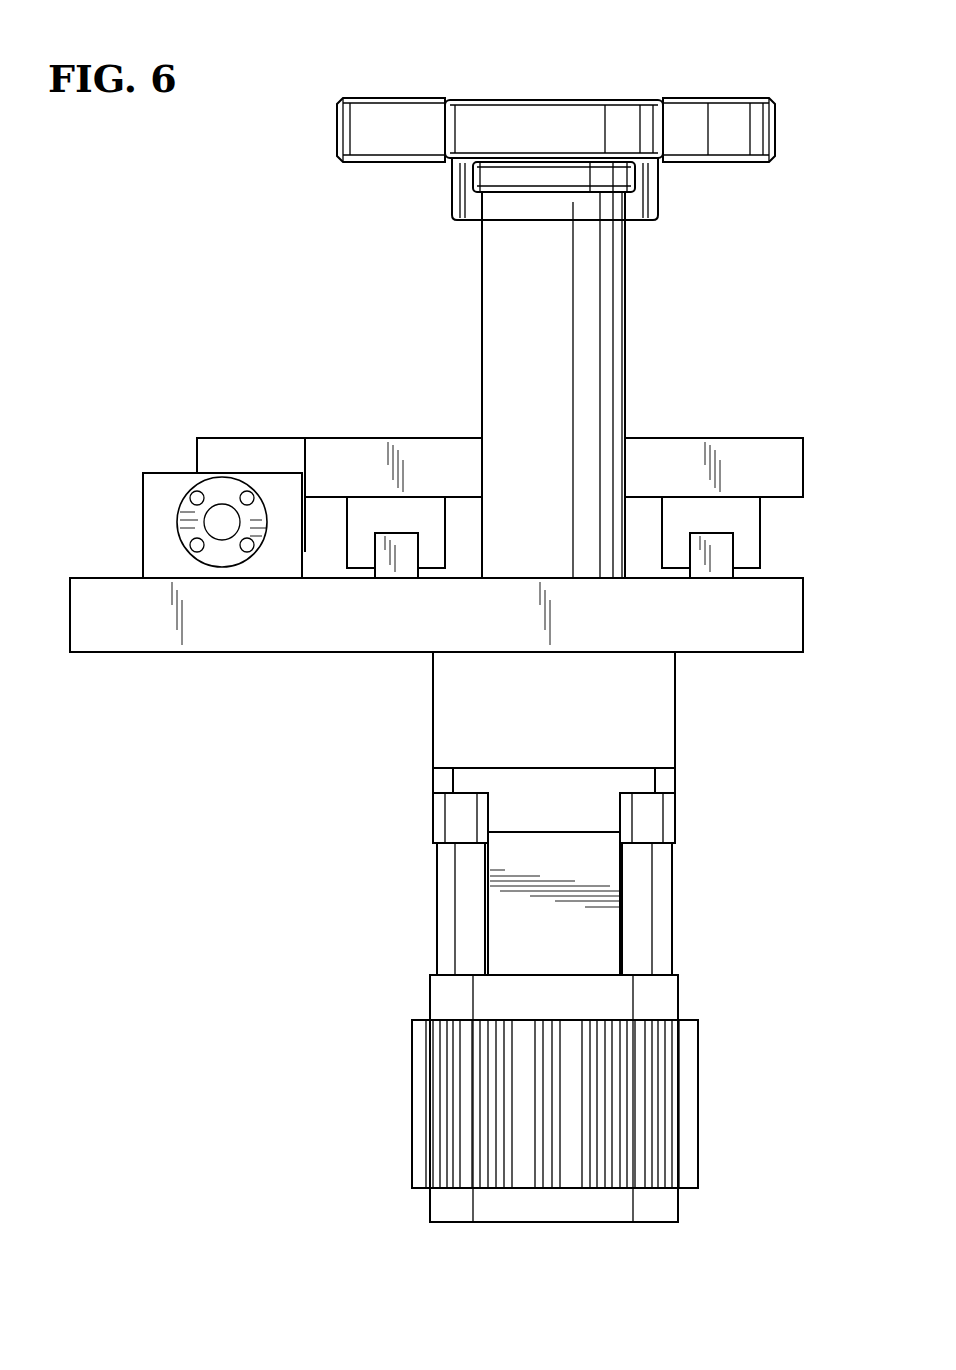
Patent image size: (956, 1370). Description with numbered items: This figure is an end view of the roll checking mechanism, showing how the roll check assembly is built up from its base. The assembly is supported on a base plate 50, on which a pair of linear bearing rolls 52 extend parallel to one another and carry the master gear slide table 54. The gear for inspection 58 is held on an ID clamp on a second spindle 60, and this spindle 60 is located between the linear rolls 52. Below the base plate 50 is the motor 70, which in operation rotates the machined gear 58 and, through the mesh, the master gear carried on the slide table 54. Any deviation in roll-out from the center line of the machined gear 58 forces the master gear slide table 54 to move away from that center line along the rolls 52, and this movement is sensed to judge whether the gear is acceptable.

The base plate 50 is at (734, 625).
The linear bearing rolls 52 is at (411, 527).
The master gear slide table 54 is at (768, 455).
The gear for inspection 58 is at (772, 125).
The second spindle 60 is at (617, 288).
The motor 70 is at (667, 1000).